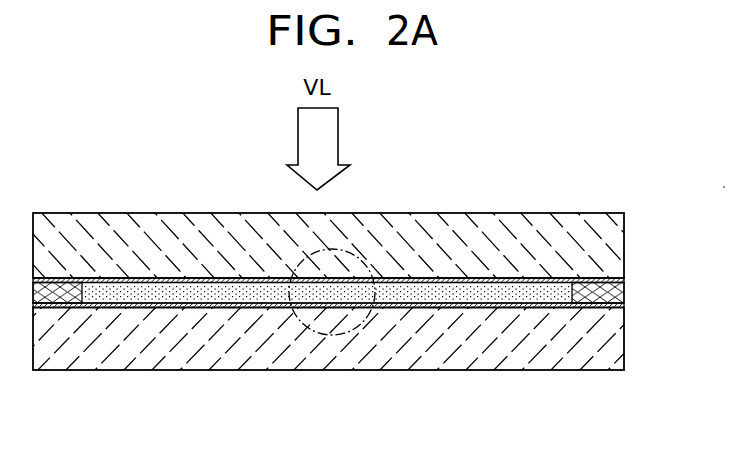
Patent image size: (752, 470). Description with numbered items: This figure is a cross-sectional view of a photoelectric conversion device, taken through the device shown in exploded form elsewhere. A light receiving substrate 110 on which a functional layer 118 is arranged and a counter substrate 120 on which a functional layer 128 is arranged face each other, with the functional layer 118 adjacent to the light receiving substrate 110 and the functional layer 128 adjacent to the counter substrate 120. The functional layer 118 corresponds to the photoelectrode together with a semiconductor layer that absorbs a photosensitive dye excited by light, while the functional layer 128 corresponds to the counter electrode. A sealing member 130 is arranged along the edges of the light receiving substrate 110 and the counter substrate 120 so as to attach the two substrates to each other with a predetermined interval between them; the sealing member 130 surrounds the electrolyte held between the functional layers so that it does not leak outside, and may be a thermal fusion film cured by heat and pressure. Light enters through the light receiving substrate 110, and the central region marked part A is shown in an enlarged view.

The light receiving substrate 110 is at (613, 247).
The functional layer 118 is at (624, 281).
The sealing member 130 is at (624, 292).
The functional layer 128 is at (624, 305).
The counter substrate 120 is at (613, 343).
The part A is at (313, 334).